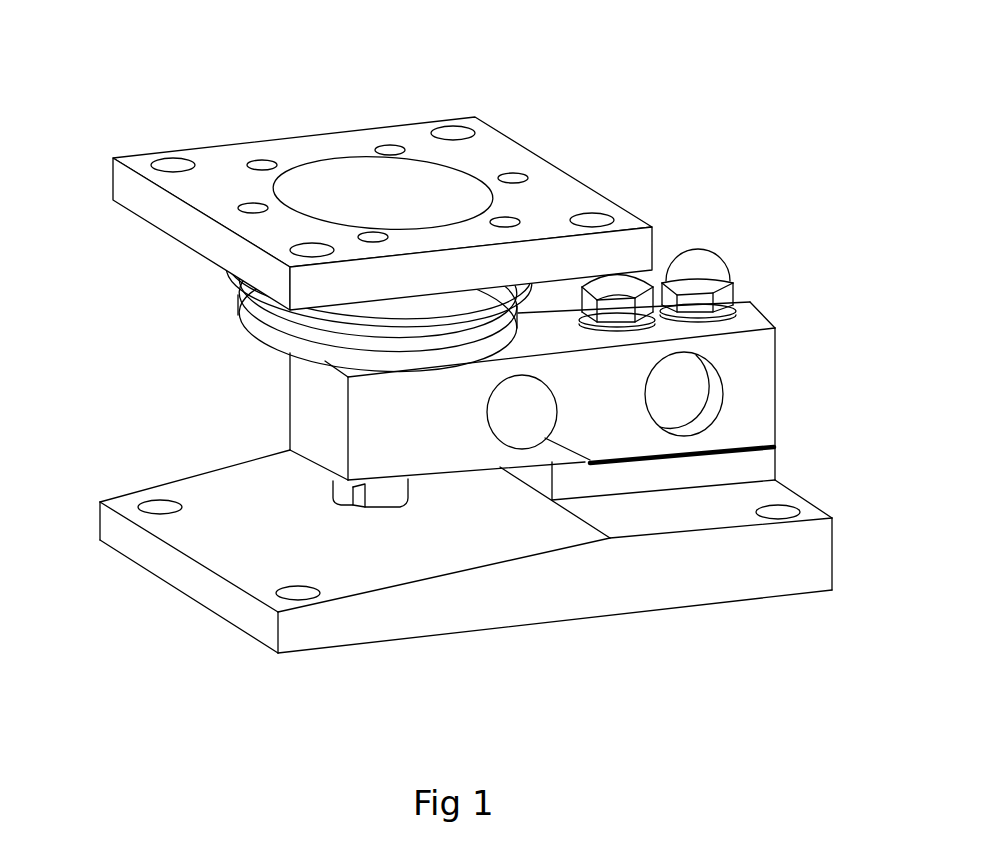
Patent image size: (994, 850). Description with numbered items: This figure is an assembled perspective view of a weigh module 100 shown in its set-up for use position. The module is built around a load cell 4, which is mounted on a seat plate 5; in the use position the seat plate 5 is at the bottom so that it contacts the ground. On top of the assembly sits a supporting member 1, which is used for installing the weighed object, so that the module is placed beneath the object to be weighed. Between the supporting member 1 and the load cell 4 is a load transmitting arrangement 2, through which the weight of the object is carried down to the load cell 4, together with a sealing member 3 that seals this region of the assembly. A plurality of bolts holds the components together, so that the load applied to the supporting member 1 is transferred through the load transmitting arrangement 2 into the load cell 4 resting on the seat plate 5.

The weigh module 100 is at (463, 52).
The supporting member 1 is at (113, 160).
The load transmitting arrangement 2 is at (368, 197).
The sealing member 3 is at (238, 313).
The load cell 4 is at (752, 412).
The seat plate 5 is at (793, 550).